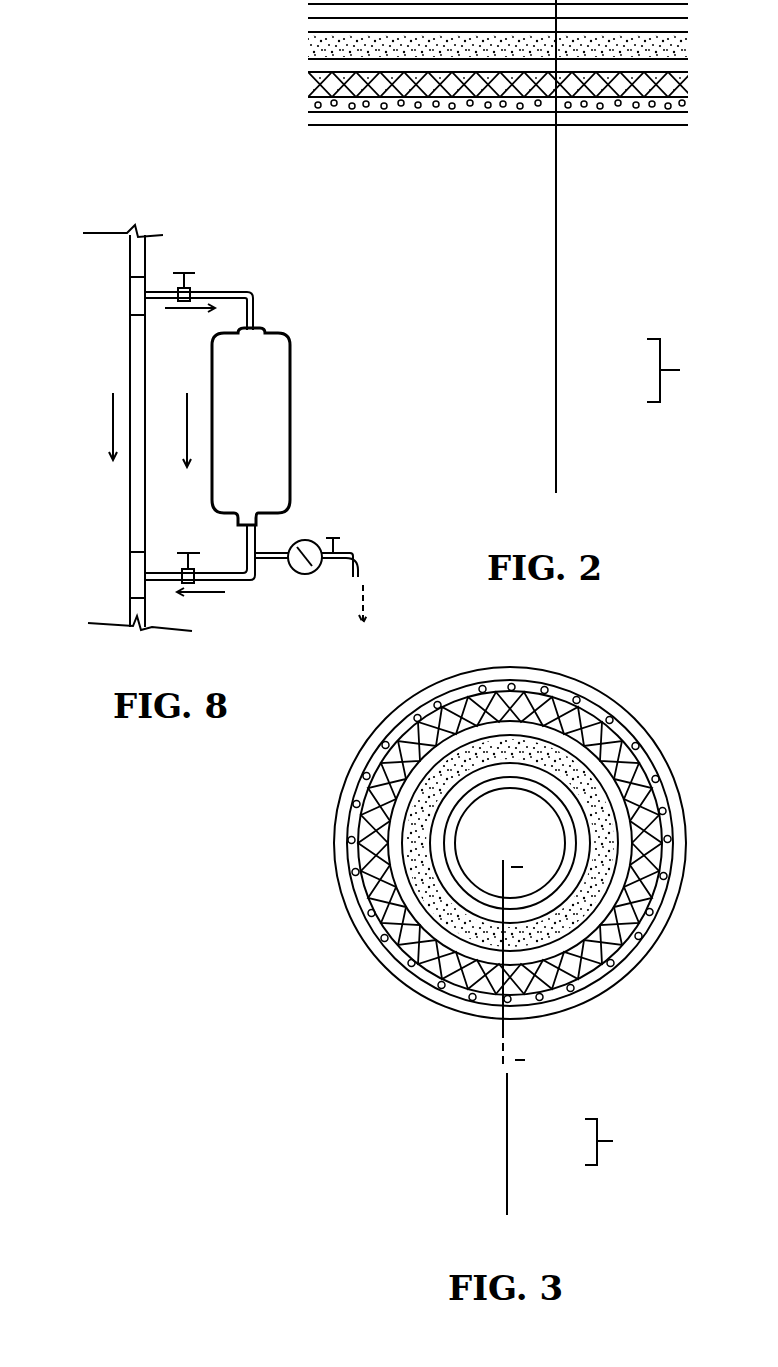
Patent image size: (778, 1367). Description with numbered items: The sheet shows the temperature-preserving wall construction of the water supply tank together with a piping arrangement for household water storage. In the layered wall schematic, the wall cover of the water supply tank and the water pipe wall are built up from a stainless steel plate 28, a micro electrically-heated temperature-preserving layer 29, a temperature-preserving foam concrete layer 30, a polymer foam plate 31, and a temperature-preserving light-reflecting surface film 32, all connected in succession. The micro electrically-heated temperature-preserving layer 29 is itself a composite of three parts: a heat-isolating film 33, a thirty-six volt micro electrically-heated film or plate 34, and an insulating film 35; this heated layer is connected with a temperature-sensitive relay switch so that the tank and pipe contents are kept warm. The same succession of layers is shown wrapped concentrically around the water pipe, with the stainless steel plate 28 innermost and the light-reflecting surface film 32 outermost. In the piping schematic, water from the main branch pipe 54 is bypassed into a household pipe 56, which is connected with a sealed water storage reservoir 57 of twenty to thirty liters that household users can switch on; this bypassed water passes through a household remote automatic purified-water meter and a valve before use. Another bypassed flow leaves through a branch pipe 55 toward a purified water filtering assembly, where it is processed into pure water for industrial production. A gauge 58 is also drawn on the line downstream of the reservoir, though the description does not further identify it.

In FIG. 2, the stainless steel plate 28 is at (556, 307).
In FIG. 3, the stainless steel plate 28 is at (507, 1098).
In FIG. 2, the micro electrically-heated temperature-preserving layer 29 is at (683, 370).
In FIG. 3, the micro electrically-heated temperature-preserving layer 29 is at (616, 1142).
In FIG. 2, the temperature-preserving foam concrete layer 30 is at (556, 433).
In FIG. 3, the temperature-preserving foam concrete layer 30 is at (507, 1182).
In FIG. 2, the polymer foam plate 31 is at (556, 463).
In FIG. 3, the polymer foam plate 31 is at (507, 1198).
In FIG. 2, the temperature-preserving light-reflecting surface film 32 is at (556, 493).
In FIG. 3, the temperature-preserving light-reflecting surface film 32 is at (507, 1215).
In FIG. 2, the heat-isolating film 33 is at (556, 339).
In FIG. 3, the heat-isolating film 33 is at (507, 1119).
In FIG. 2, the micro electrically-heated film or plate 34 is at (556, 370).
In FIG. 3, the micro electrically-heated film or plate 34 is at (507, 1141).
In FIG. 2, the insulating film 35 is at (556, 402).
In FIG. 3, the insulating film 35 is at (507, 1160).
In FIG. 8, the main branch pipe 54 is at (133, 338).
In FIG. 8, the branch pipe 55 is at (230, 582).
In FIG. 8, the household pipe 56 is at (223, 292).
In FIG. 8, the sealed water storage reservoir 57 is at (290, 382).
In FIG. 8, the pressure gauge 58 is at (307, 545).